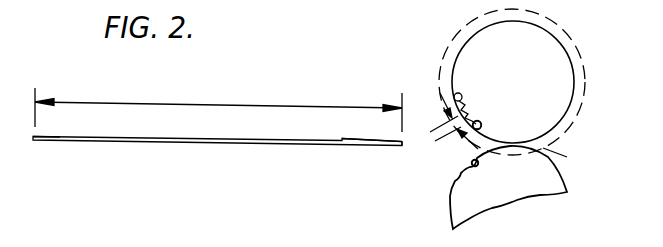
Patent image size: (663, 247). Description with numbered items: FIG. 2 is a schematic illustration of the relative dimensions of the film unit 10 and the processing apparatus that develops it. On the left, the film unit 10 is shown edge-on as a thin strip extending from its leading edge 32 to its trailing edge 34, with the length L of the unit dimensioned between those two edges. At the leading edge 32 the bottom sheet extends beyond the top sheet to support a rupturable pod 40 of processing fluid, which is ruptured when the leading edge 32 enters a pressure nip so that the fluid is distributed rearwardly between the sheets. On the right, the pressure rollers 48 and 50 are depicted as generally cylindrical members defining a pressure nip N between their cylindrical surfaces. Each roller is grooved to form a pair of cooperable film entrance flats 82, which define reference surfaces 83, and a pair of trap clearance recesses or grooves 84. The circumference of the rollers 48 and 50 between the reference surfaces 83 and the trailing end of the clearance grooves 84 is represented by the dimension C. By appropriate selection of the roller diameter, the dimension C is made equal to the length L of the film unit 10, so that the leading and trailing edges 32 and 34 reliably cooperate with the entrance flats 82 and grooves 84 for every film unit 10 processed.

The film unit 10 is at (182, 148).
The trailing edge 34 is at (33, 137).
The rupturable pod 40 is at (358, 140).
The leading edge 32 is at (403, 146).
The pressure roller 48 is at (527, 70).
The film entrance flats 82 is at (457, 93).
The reference surfaces 83 is at (464, 108).
The trap clearance recesses or grooves 84 is at (477, 120).
The pressure roller 50 is at (540, 183).
The length of the film unit L is at (218, 104).
The circumference dimension C is at (585, 89).
The pressure nip N is at (563, 158).